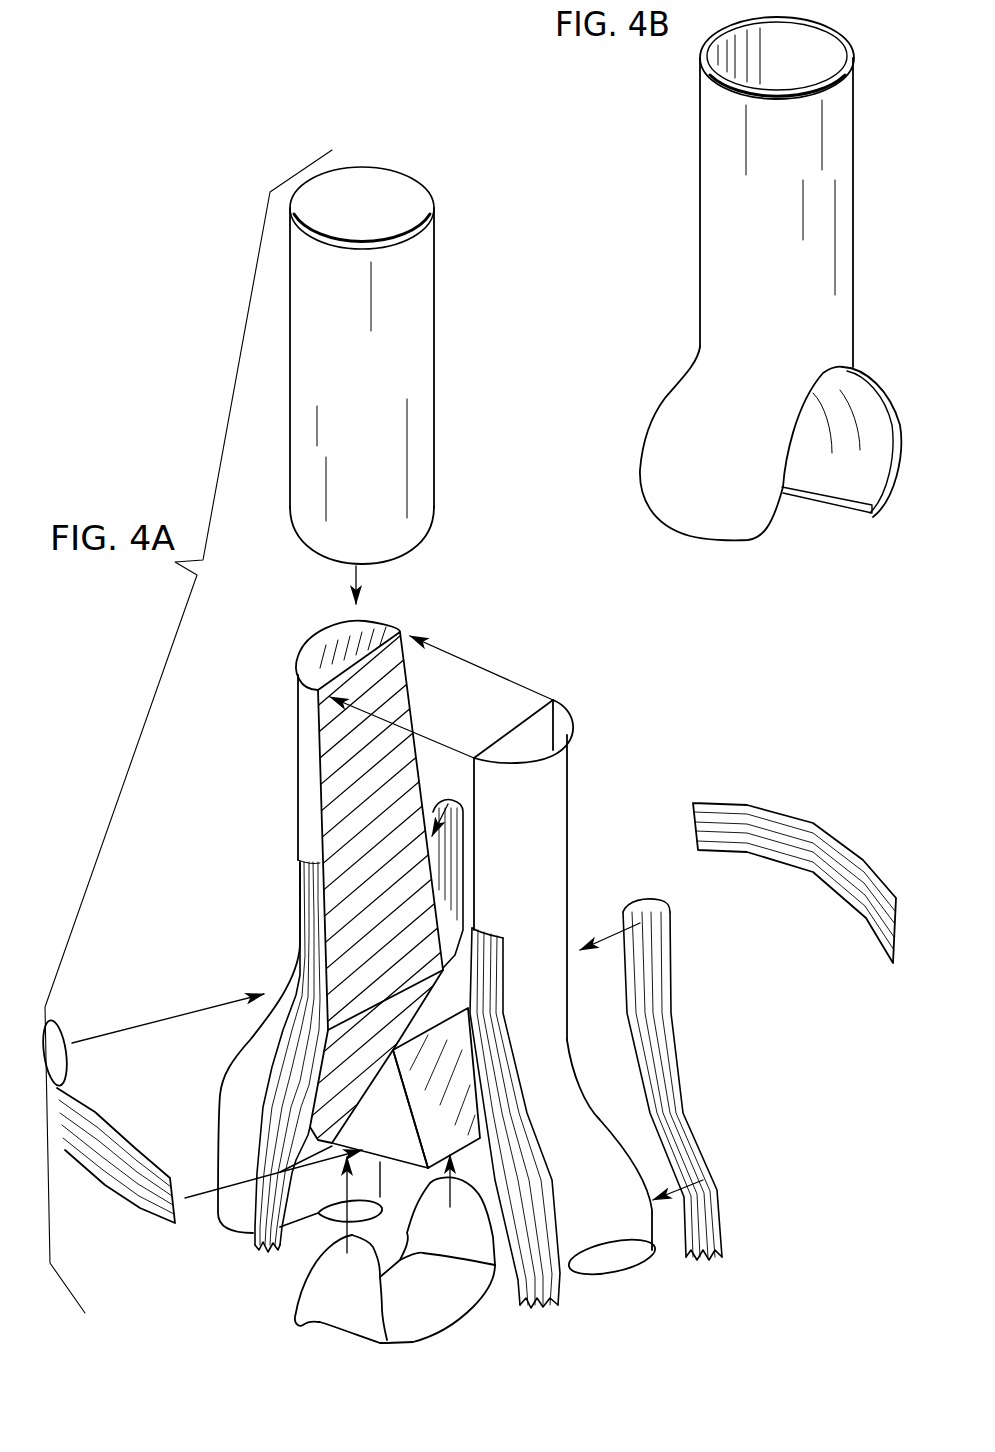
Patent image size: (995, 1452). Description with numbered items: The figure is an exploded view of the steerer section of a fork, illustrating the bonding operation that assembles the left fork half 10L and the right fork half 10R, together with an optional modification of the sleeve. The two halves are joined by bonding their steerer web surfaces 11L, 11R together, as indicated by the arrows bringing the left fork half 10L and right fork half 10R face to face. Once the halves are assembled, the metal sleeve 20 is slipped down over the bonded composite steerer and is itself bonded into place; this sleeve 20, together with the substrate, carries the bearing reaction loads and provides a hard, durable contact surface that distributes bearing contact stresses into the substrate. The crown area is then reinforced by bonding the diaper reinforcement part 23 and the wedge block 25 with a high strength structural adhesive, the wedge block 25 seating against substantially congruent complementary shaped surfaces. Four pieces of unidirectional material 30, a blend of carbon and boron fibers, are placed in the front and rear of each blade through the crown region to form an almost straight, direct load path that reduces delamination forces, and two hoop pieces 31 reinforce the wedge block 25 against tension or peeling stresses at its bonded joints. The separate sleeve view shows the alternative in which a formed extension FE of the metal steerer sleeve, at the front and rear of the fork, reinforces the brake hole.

In FIG. 4A, the metal sleeve 20 is at (408, 385).
In FIG. 4A, the left fork half 10L is at (364, 896).
In FIG. 4A, the right fork half 10R is at (567, 951).
In FIG. 4A, the left steerer web surface 11L is at (377, 700).
In FIG. 4A, the right steerer web surface 11R is at (551, 690).
In FIG. 4A, the unidirectional material pieces 30 is at (723, 970).
In FIG. 4A, the hoop pieces 31 is at (855, 812).
In FIG. 4A, the wedge block 25 is at (387, 1130).
In FIG. 4A, the diaper reinforcement part 23 is at (335, 1287).
In FIG. 4B, the formed extension FE is at (653, 513).